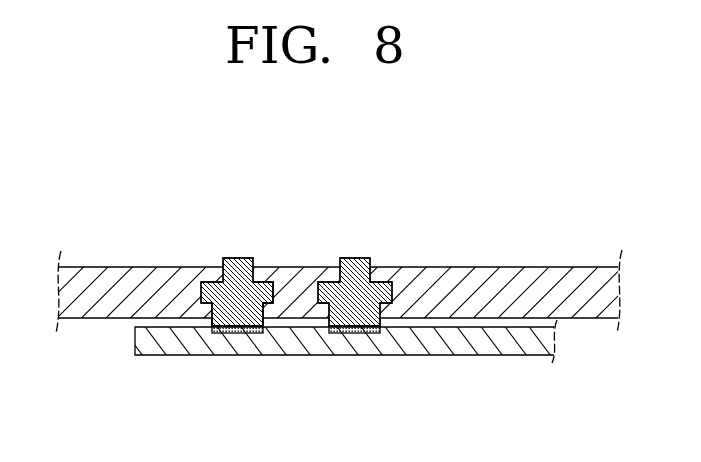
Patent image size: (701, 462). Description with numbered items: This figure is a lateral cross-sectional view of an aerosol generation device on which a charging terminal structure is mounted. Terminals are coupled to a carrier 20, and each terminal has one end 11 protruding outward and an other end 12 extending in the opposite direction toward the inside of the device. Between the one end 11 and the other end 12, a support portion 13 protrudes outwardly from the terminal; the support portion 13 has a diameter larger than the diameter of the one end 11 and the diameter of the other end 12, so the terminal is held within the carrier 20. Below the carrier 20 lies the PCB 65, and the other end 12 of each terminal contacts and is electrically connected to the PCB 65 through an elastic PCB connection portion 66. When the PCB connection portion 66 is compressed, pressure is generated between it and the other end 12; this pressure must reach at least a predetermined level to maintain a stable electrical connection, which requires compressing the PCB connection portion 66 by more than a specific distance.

The carrier 20 is at (472, 267).
The one end 11 is at (230, 258).
The support portion 13 is at (272, 288).
The other end 12 is at (258, 322).
The PCB 65 is at (163, 348).
The PCB connection portion 66 is at (235, 334).